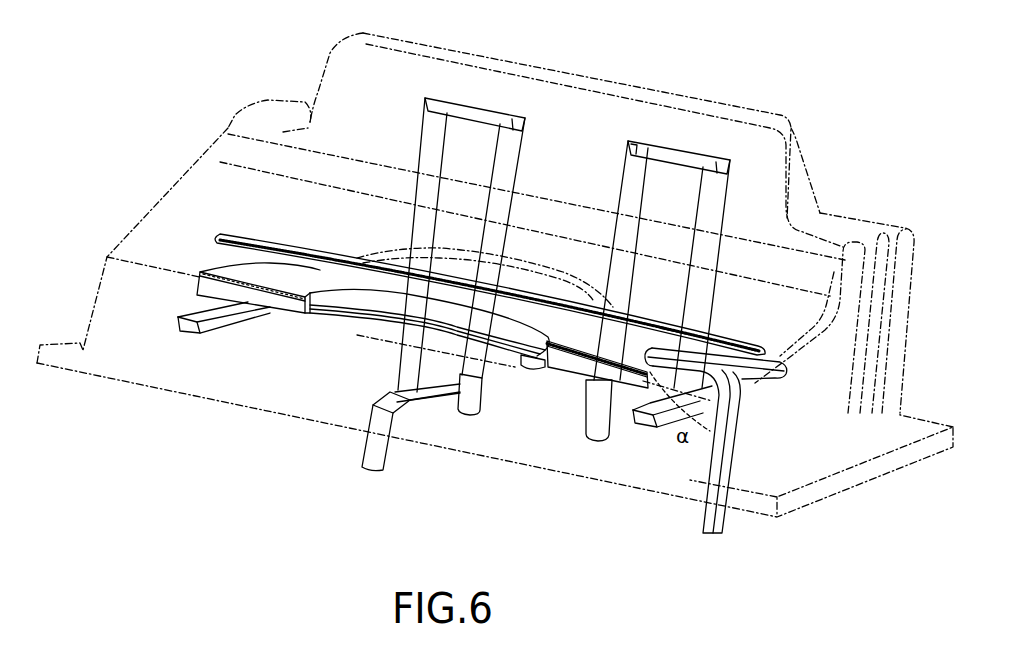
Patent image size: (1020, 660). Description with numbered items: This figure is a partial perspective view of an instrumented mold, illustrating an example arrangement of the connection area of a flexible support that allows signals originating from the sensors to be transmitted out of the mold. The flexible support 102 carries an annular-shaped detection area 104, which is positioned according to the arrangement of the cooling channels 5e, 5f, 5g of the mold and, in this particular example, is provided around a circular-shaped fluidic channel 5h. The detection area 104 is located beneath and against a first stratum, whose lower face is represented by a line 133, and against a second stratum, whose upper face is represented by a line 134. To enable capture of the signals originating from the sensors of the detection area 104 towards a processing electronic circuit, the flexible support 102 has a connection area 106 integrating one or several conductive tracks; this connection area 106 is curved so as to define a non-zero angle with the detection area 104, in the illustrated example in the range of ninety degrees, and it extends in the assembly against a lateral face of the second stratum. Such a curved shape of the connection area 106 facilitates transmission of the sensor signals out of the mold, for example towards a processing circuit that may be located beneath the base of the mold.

The flexible support 102 is at (639, 350).
The detection area 104 is at (334, 290).
The connection area 106 is at (727, 522).
The line representing the lower face of the first stratum 133 is at (200, 269).
The line representing the upper face of the second stratum 134 is at (275, 315).
The cooling channel 5e is at (440, 400).
The cooling channel 5f is at (713, 200).
The cooling channel 5g is at (703, 346).
The fluidic channel 5h is at (523, 365).